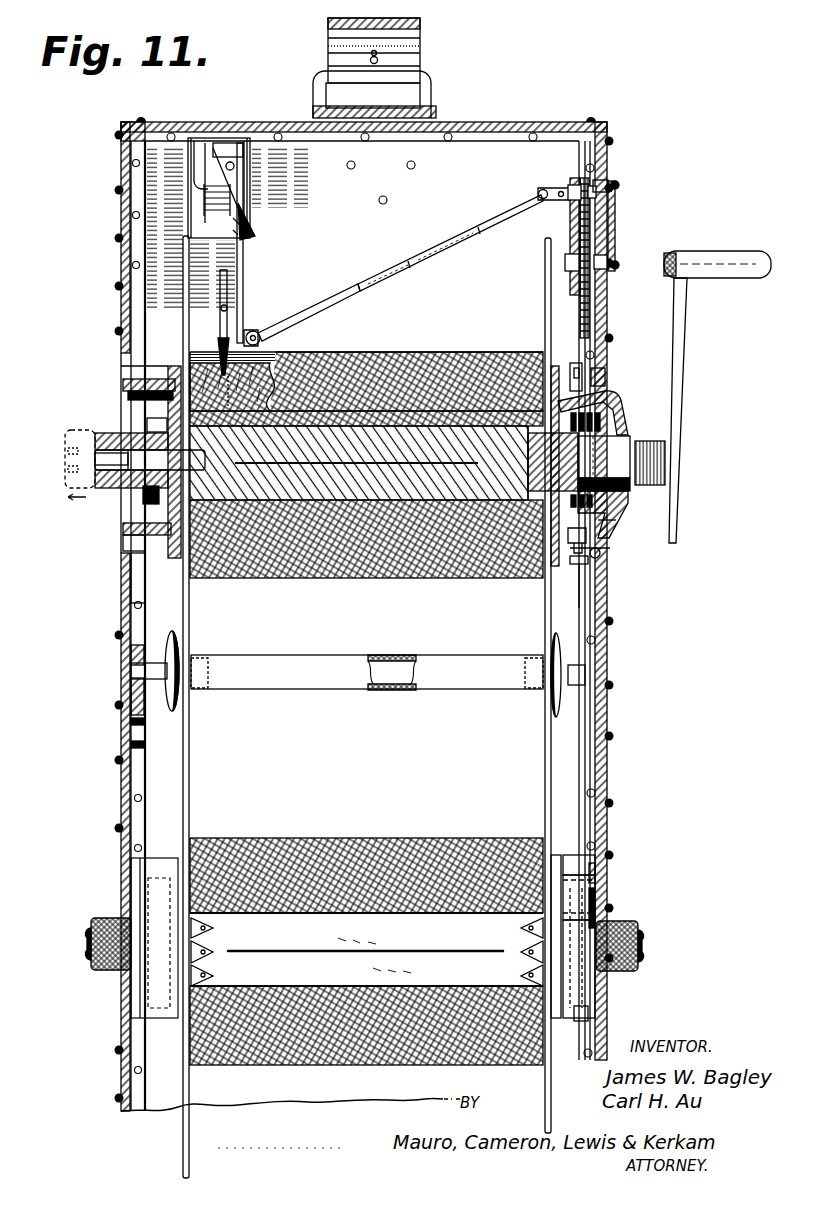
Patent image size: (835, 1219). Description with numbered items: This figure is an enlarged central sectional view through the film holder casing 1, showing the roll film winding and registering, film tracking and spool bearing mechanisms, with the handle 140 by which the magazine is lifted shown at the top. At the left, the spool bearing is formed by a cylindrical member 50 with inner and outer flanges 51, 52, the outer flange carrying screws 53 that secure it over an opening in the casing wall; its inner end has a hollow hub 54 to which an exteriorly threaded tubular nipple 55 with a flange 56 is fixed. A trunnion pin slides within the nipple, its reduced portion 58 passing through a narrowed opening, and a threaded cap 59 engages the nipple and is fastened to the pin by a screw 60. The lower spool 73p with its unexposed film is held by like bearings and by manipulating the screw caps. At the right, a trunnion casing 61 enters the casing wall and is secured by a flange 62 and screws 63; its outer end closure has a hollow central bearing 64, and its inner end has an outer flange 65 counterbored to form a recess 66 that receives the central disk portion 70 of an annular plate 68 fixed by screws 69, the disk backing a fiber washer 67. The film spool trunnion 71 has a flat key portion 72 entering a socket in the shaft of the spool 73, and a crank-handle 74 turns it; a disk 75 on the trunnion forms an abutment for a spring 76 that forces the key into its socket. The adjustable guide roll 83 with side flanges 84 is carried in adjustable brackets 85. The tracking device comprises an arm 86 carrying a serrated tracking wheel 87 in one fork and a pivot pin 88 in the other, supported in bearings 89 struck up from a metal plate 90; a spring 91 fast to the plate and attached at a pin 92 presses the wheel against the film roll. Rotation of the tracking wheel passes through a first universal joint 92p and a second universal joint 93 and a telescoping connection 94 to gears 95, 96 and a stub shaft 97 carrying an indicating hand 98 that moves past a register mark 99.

The film holder casing 1 is at (590, 786).
The handle 140 is at (412, 16).
The cylindrical member 50 is at (572, 862).
The inner flange 51 is at (110, 483).
The outer flange 52 is at (592, 857).
The screws 53 is at (118, 560).
The hollow hub 54 is at (598, 893).
The threaded tubular nipple 55 is at (590, 913).
The flange 56 is at (147, 493).
The reduced portion 58 is at (92, 462).
The threaded cap 59 is at (106, 425).
The screw 60 is at (95, 450).
The trunnion casing 61 is at (612, 396).
The flange 62 is at (597, 362).
The screws 63 is at (566, 362).
The hollow central bearing 64 is at (612, 507).
The outer flange 65 is at (560, 552).
The recess 66 is at (560, 545).
The fiber washer 67 is at (602, 527).
The annular plate 68 is at (537, 566).
The screws 69 is at (522, 572).
The central disk portion 70 is at (520, 375).
The film spool bearing or trunnion 71 is at (612, 442).
The flat key portion 72 is at (505, 440).
The spool 73 is at (359, 463).
The lower spool 73p is at (366, 951).
The crank-handle 74 is at (676, 300).
The disk 75 is at (600, 386).
The spring 76 is at (658, 458).
The adjustable guide roll 83 is at (280, 680).
The side flanges 84 is at (168, 697).
The adjustable brackets 85 is at (118, 652).
The arm 86 is at (237, 272).
The tracking wheel 87 is at (211, 300).
The shaft or pin 88 is at (218, 135).
The bearings 89 is at (186, 130).
The metal plate 90 is at (150, 172).
The spring 91 is at (196, 190).
The pin 92 is at (248, 192).
The universal joint 92p is at (268, 320).
The universal joint 93 is at (535, 183).
The telescoping connection 94 is at (378, 256).
The gear 95 is at (583, 175).
The gear 96 is at (562, 226).
The stub shaft 97 is at (604, 250).
The indicating hand 98 is at (609, 212).
The register mark 99 is at (604, 179).